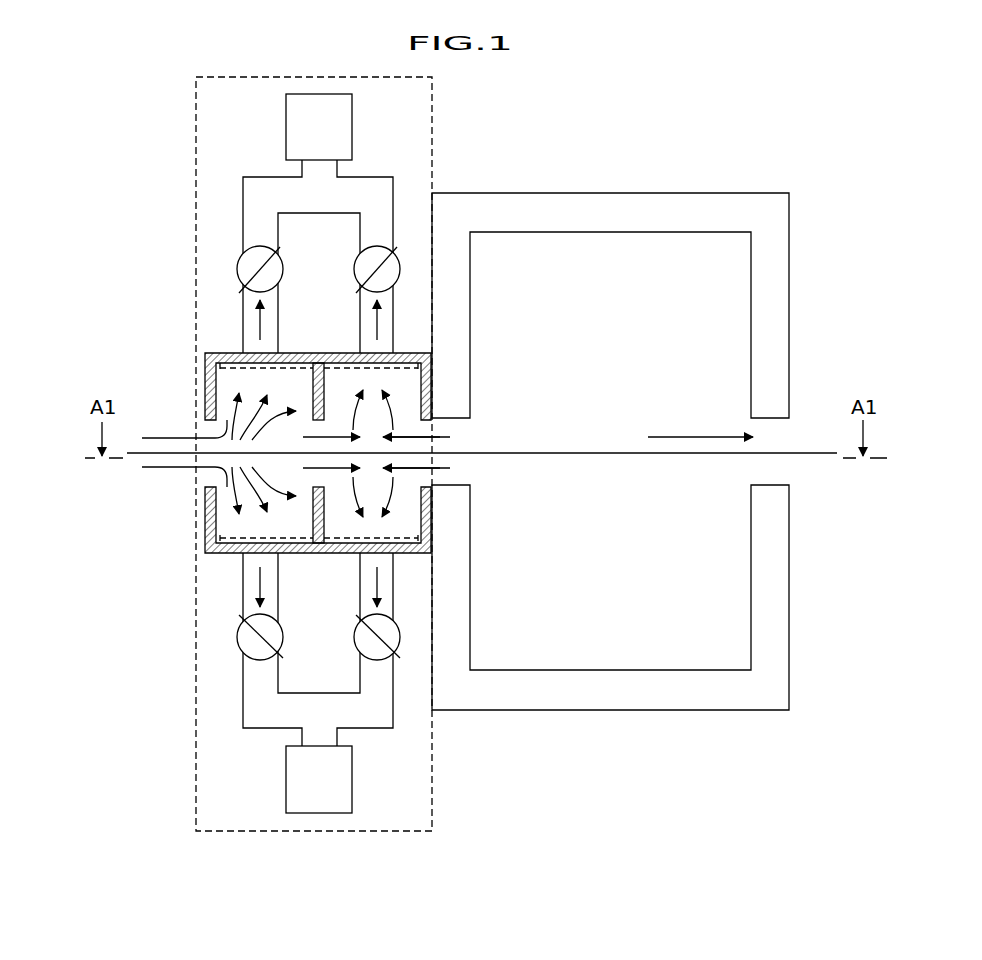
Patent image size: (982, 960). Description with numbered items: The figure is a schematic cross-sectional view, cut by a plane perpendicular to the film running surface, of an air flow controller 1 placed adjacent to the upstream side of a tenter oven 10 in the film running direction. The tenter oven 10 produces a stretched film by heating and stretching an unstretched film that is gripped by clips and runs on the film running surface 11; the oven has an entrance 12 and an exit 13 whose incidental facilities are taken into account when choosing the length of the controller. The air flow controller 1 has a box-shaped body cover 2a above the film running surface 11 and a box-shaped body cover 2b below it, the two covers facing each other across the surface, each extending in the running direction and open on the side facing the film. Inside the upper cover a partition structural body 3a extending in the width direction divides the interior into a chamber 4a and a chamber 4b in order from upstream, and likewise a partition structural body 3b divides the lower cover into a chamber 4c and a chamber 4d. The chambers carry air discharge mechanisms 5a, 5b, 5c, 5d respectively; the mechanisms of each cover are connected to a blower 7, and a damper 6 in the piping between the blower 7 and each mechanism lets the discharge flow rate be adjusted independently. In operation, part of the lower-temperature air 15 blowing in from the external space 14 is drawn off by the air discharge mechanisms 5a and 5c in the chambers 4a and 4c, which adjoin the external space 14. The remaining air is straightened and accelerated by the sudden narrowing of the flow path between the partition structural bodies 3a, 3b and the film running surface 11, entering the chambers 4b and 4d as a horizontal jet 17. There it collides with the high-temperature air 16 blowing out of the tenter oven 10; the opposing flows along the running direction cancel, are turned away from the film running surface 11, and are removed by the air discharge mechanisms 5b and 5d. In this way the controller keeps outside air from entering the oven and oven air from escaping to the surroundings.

The air flow controller 1 is at (192, 180).
The box-shaped body cover 2a is at (223, 352).
The box-shaped body cover 2b is at (223, 555).
The partition structural body 3a is at (317, 353).
The partition structural body 3b is at (317, 553).
The chamber 4a is at (260, 383).
The chamber 4b is at (377, 378).
The chamber 4c is at (260, 523).
The chamber 4d is at (377, 523).
The air discharge mechanism 5a is at (218, 345).
The air discharge mechanism 5b is at (413, 347).
The air discharge mechanism 5c is at (218, 562).
The air discharge mechanism 5d is at (413, 560).
The damper 6 is at (355, 258).
The blower 7 is at (353, 125).
The tenter oven 10 is at (603, 193).
The film running surface 11 is at (610, 451).
The entrance 12 is at (450, 427).
The exit 13 is at (768, 440).
The external space 14 is at (67, 465).
The air blowing in from the outside 15 is at (187, 468).
The air blowing from the tenter oven 16 is at (442, 470).
The horizontal jet 17 is at (332, 432).